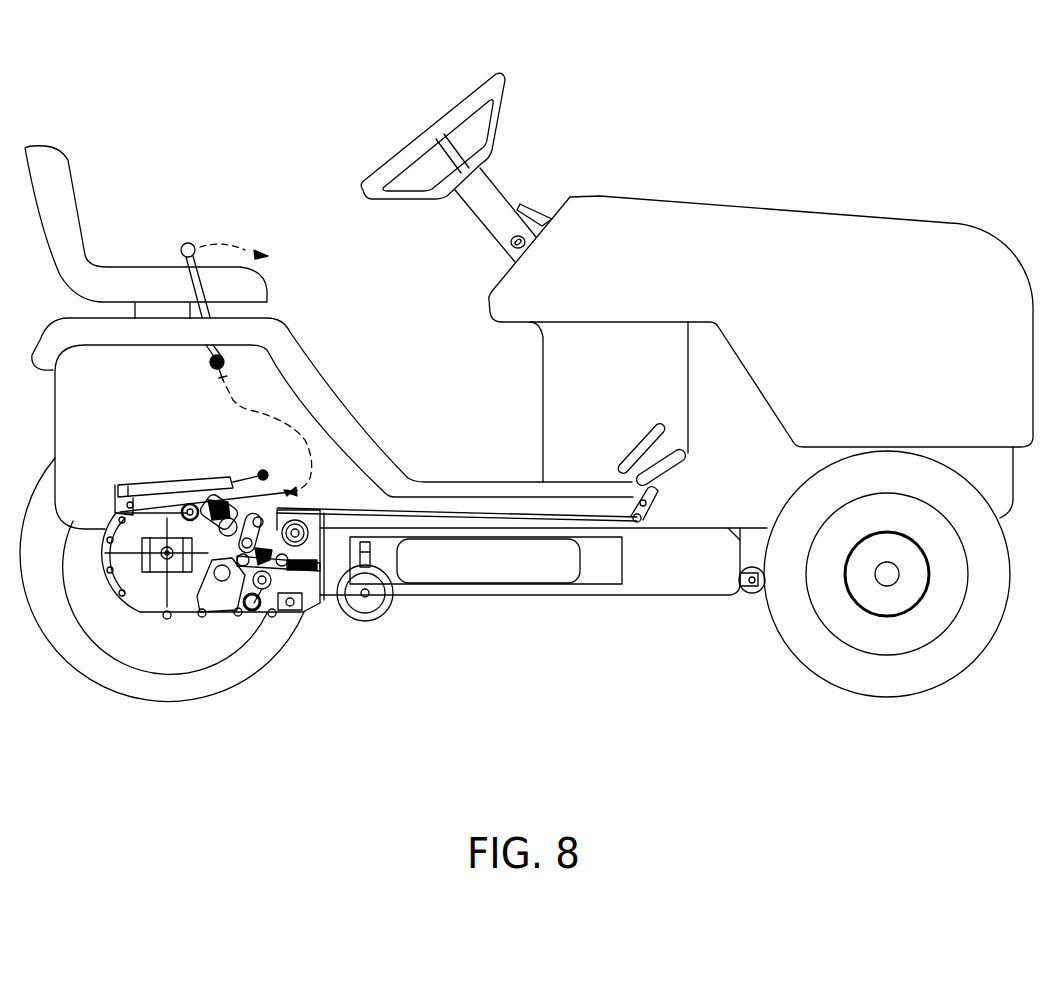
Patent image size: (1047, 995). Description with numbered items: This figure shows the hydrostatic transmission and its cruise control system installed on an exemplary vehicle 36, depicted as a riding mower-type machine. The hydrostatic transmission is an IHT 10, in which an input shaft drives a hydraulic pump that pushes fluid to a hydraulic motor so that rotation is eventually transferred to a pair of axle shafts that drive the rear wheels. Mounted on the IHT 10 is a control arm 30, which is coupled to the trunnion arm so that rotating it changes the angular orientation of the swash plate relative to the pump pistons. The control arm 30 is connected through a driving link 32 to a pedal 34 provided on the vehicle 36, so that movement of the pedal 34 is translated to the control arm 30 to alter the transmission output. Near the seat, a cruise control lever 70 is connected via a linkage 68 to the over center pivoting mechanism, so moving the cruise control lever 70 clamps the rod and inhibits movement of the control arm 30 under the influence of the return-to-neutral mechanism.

The IHT 10 is at (318, 622).
The control arm 30 is at (282, 477).
The driving link 32 is at (517, 513).
The pedal 34 is at (637, 447).
The vehicle 36 is at (800, 174).
The linkage 68 is at (245, 408).
The cruise control lever 70 is at (190, 283).